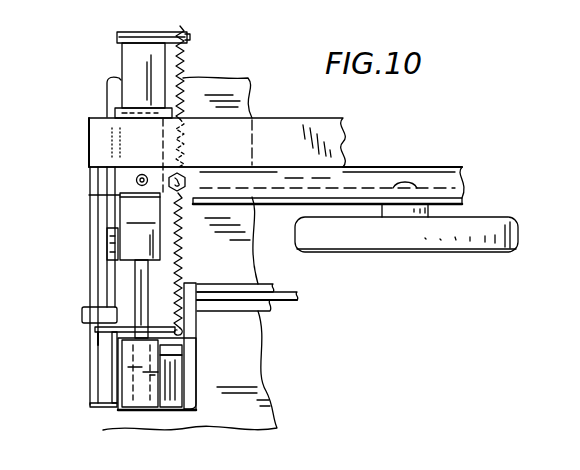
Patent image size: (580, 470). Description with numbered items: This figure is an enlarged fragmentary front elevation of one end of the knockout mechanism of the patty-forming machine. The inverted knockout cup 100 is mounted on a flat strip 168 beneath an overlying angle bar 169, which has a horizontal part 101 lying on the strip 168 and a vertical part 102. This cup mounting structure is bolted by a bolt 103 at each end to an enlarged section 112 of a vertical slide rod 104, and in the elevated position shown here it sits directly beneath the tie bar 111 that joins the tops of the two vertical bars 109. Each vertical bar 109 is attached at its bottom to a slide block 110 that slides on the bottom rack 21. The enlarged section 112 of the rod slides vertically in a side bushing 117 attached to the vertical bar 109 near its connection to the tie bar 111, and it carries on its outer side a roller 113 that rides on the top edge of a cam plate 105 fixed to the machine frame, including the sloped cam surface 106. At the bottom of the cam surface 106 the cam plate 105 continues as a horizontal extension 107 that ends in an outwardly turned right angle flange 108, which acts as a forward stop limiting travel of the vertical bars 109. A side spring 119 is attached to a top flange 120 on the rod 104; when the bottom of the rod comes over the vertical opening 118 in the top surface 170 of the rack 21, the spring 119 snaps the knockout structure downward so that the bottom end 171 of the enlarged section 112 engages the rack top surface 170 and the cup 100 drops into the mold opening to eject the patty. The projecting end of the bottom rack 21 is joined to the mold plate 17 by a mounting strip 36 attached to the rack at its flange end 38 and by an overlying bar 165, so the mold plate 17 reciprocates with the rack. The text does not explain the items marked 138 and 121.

The tie bar 111 is at (292, 125).
The beam end 138 is at (0, 153).
The top flange 120 is at (163, 30).
The side bushing 117 is at (128, 113).
The side spring 119 is at (185, 63).
The horizontal part 101 is at (350, 188).
The vertical part 102 is at (442, 175).
The angle bar 169 is at (458, 165).
The flat strip 168 is at (454, 204).
The knockout cup 100 is at (377, 243).
The bolt 103 is at (136, 180).
The vertical bar 109 is at (88, 202).
The horizontal extension 107 is at (88, 348).
The cam plate 105 is at (102, 275).
The roller 113 is at (108, 260).
The vertical slide rod 104 is at (112, 297).
The cam surface 106 is at (100, 326).
The right angle flange 108 is at (92, 323).
The slide block 110 is at (100, 398).
The enlarged section 112 is at (140, 226).
The bottom end 171 is at (158, 278).
The overlying bar 165 is at (225, 288).
The mold plate 17 is at (289, 300).
The mounting strip 36 is at (232, 305).
The flange end 38 is at (270, 360).
The bottom rack 21 is at (158, 410).
The vertical opening 118 is at (131, 407).
The rod end 121 is at (197, 337).
The top surface 170 is at (182, 350).